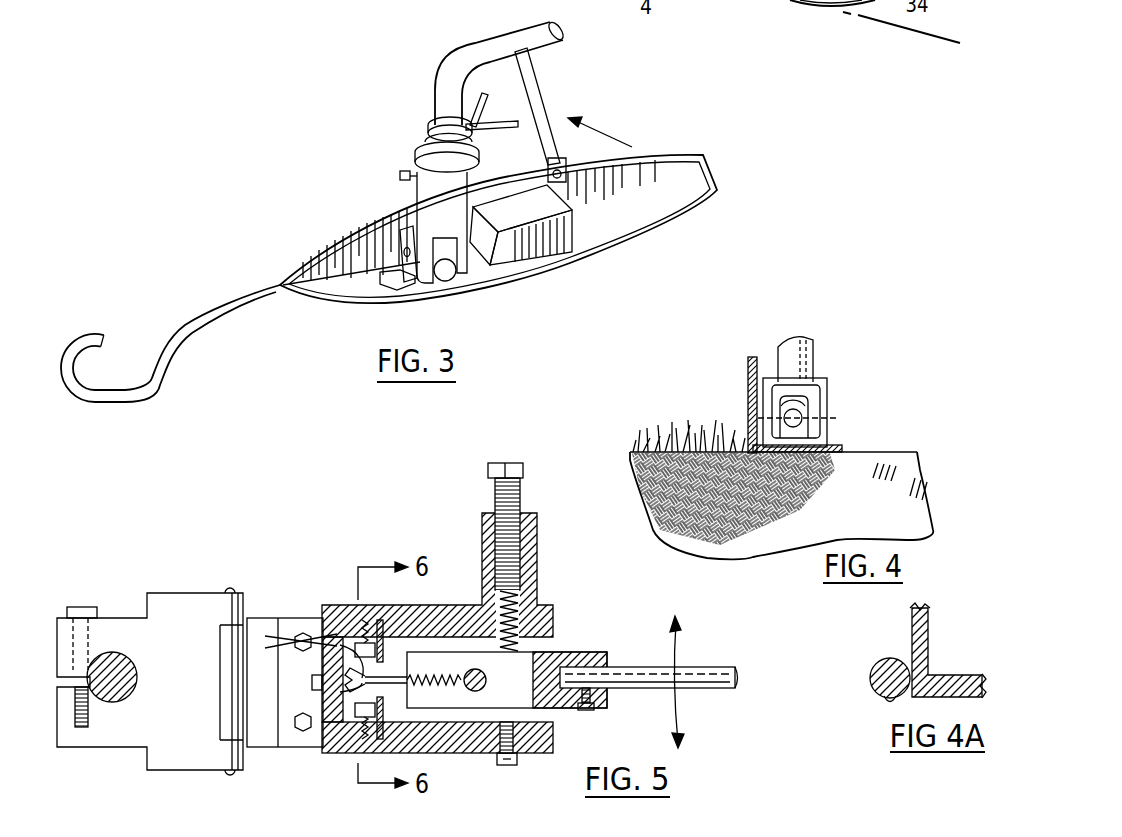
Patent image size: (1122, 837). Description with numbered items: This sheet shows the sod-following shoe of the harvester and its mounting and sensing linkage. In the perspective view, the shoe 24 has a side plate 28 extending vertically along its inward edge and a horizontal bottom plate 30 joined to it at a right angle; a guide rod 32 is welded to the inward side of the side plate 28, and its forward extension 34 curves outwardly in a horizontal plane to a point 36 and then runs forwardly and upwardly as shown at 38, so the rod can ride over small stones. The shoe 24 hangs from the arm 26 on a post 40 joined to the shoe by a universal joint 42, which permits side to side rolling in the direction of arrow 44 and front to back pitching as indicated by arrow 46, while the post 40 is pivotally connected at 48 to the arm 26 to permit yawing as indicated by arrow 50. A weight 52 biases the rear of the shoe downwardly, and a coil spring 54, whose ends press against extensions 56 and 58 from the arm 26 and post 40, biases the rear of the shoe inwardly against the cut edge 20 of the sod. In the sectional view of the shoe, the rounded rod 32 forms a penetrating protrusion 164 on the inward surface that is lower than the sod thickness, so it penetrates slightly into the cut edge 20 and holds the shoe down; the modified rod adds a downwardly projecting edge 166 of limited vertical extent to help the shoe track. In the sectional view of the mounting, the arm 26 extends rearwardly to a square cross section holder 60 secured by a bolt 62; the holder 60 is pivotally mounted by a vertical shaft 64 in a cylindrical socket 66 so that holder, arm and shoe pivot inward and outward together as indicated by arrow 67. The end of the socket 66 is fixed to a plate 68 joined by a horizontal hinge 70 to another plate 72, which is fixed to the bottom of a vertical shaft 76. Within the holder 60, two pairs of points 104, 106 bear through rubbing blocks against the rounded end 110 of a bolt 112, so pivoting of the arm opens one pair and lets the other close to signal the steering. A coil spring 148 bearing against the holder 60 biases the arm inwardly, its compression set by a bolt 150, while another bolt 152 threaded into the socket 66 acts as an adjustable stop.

In FIG. 4, the cut edge 20 is at (745, 445).
In FIG. 3, the shoe 24 is at (372, 135).
In FIG. 3, the arm 26 is at (532, 33).
In FIG. 5, the arm 26 is at (718, 664).
In FIG. 3, the side plate 28 is at (674, 152).
In FIG. 4, the side plate 28 is at (753, 357).
In FIG. 3, the bottom plate 30 is at (662, 216).
In FIG. 4, the bottom plate 30 is at (853, 447).
In FIG. 3, the guide rod 32 is at (279, 283).
In FIG. 4, the guide rod 32 is at (787, 485).
In FIG. 4A, the guide rod 32 is at (888, 658).
In FIG. 3, the forward extension 34 is at (212, 304).
In FIG. 3, the point 36 is at (162, 386).
In FIG. 3, the forwardly and upwardly extending portion 38 is at (108, 389).
In FIG. 3, the post 40 is at (410, 178).
In FIG. 4, the post 40 is at (813, 353).
In FIG. 3, the universal joint 42 is at (424, 296).
In FIG. 4, the universal joint 42 is at (802, 432).
In FIG. 4, the arrow 44 is at (813, 410).
In FIG. 3, the arrow 46 is at (437, 256).
In FIG. 3, the pivot 48 is at (430, 130).
In FIG. 3, the arrow 50 is at (484, 163).
In FIG. 3, the weight 52 is at (558, 258).
In FIG. 3, the coil spring 54 is at (503, 121).
In FIG. 3, the extension 56 is at (545, 93).
In FIG. 3, the extension 58 is at (484, 93).
In FIG. 5, the holder 60 is at (578, 655).
In FIG. 5, the bolt 62 is at (588, 711).
In FIG. 5, the vertical shaft 64 is at (488, 680).
In FIG. 5, the socket 66 is at (452, 604).
In FIG. 5, the arrow 67 is at (683, 647).
In FIG. 5, the plate 68 is at (297, 616).
In FIG. 5, the hinge 70 is at (228, 590).
In FIG. 5, the plate 72 is at (165, 592).
In FIG. 5, the vertical shaft 76 is at (133, 688).
In FIG. 5, the points 104 is at (367, 612).
In FIG. 5, the points 106 is at (375, 745).
In FIG. 5, the rounded end 110 is at (340, 692).
In FIG. 5, the bolt 112 is at (427, 677).
In FIG. 5, the coil spring 148 is at (514, 592).
In FIG. 5, the bolt 150 is at (497, 463).
In FIG. 5, the bolt 152 is at (520, 760).
In FIG. 4, the protrusion 164 is at (733, 460).
In FIG. 4A, the protrusion 164 is at (870, 676).
In FIG. 4A, the downwardly projecting edge 166 is at (888, 703).